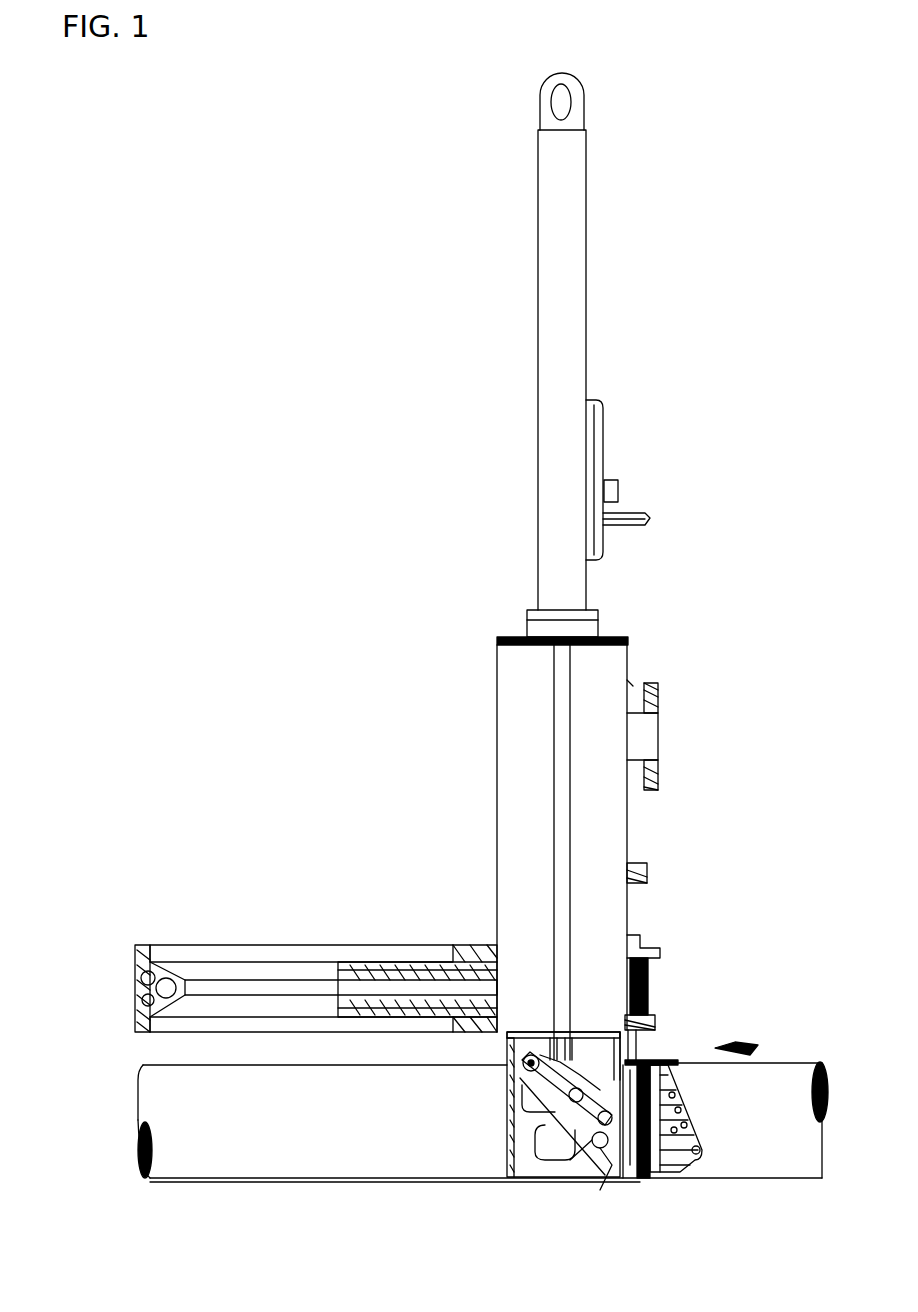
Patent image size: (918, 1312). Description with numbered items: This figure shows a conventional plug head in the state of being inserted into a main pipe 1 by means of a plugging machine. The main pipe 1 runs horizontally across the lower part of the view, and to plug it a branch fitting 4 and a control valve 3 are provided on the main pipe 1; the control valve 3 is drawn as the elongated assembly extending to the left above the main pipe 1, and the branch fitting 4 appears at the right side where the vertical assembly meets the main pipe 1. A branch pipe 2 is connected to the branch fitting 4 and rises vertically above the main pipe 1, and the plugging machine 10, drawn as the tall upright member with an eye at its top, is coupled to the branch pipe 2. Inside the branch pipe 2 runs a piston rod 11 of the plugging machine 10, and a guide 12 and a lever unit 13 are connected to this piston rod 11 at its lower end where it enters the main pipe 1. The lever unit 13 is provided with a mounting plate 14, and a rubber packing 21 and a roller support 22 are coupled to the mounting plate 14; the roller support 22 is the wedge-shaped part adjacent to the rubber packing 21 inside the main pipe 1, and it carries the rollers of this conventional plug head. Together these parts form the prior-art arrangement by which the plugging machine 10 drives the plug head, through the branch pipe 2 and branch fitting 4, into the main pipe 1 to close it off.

The main pipe 1 is at (345, 1178).
The branch pipe 2 is at (497, 690).
The control valve 3 is at (175, 945).
The branch fitting 4 is at (652, 1010).
The plugging machine 10 is at (537, 270).
The piston rod 11 is at (553, 818).
The guide 12 is at (507, 1120).
The lever unit 13 is at (590, 1185).
The mounting plate 14 is at (626, 1188).
The rubber packing 21 is at (632, 1182).
The roller support 22 is at (705, 1175).